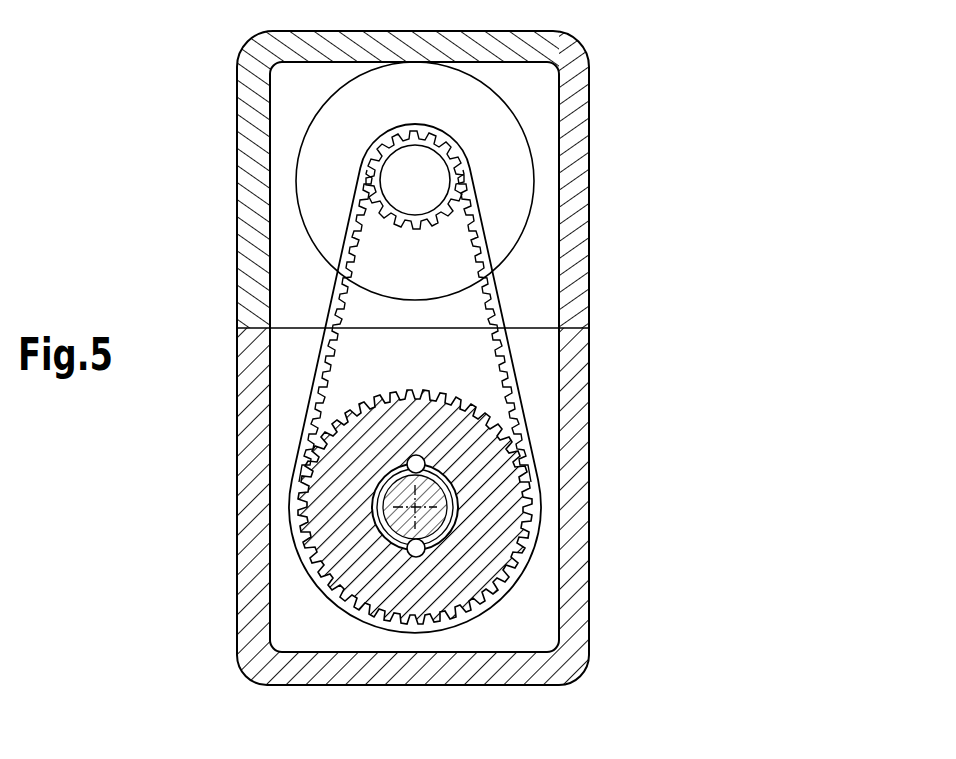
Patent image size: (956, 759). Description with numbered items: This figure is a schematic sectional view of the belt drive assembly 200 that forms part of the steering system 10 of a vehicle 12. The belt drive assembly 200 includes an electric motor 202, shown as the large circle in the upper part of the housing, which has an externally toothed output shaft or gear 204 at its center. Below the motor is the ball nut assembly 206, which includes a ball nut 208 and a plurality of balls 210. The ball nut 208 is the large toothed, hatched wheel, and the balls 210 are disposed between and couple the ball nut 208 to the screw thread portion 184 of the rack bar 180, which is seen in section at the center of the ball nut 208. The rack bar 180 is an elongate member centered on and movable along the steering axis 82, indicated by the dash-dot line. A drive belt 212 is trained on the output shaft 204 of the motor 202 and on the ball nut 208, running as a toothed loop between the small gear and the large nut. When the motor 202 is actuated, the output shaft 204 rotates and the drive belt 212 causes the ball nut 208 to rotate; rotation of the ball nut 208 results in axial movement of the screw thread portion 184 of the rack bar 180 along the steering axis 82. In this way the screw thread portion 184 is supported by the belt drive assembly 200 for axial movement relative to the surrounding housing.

The steering system 10 is at (180, 226).
The vehicle 12 is at (190, 136).
The steering axis 82 is at (395, 535).
The rack bar 180 is at (462, 518).
The screw thread portion 184 is at (445, 494).
The belt drive assembly 200 is at (665, 247).
The electric motor 202 is at (533, 180).
The output shaft 204 is at (418, 173).
The ball nut assembly 206 is at (299, 515).
The ball nut 208 is at (333, 472).
The balls 210 is at (408, 458).
The drive belt 212 is at (504, 358).